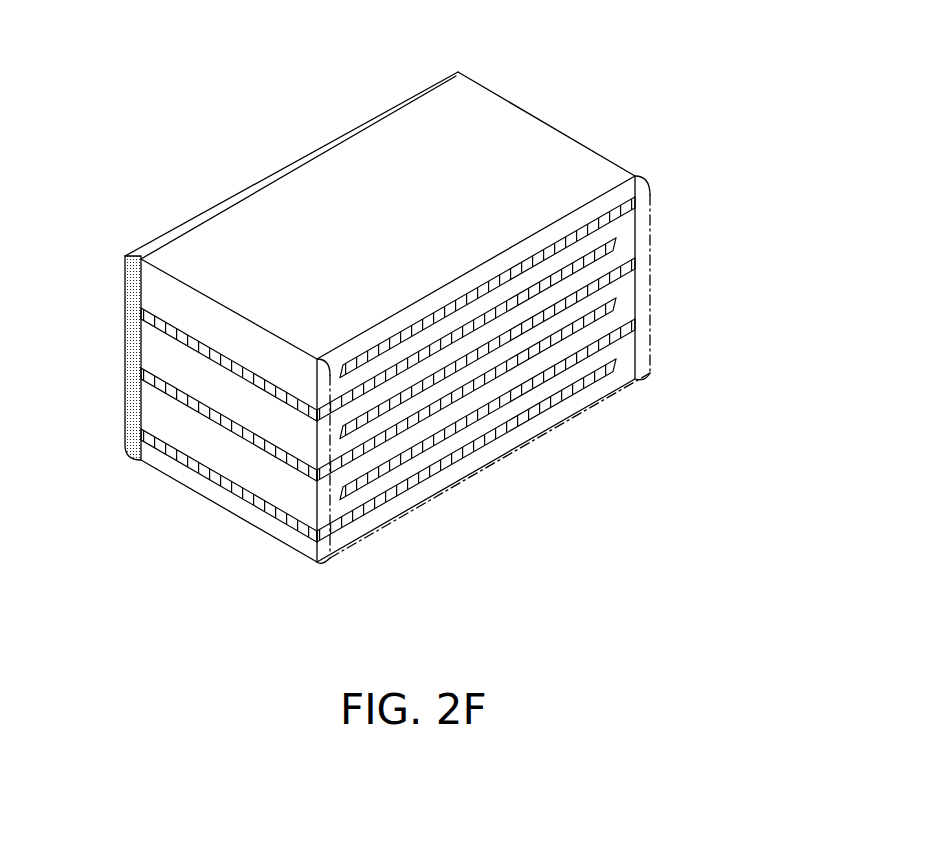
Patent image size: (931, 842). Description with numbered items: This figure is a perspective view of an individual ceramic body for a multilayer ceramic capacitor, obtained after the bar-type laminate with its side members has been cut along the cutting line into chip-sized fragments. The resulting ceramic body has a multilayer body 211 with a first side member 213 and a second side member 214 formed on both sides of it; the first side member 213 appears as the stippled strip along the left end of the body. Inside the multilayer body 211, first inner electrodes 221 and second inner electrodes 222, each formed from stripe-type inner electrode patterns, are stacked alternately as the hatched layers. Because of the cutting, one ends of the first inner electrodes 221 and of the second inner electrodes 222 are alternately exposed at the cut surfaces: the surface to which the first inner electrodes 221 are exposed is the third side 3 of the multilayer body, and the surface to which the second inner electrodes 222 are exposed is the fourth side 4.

The third side 3 is at (168, 502).
The fourth side 4 is at (607, 135).
The multilayer body 211 is at (510, 124).
The first side member 213 is at (125, 257).
The second side member 214 is at (443, 477).
The first inner electrode 221 is at (257, 502).
The second inner electrode 222 is at (632, 328).